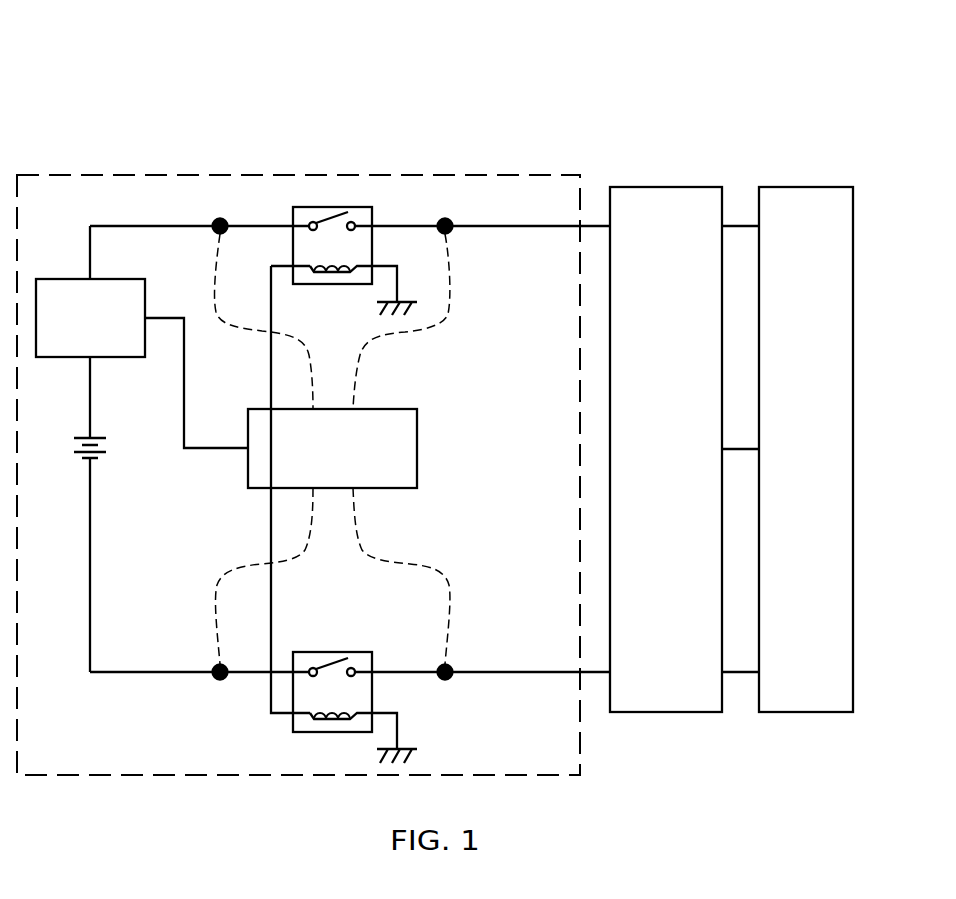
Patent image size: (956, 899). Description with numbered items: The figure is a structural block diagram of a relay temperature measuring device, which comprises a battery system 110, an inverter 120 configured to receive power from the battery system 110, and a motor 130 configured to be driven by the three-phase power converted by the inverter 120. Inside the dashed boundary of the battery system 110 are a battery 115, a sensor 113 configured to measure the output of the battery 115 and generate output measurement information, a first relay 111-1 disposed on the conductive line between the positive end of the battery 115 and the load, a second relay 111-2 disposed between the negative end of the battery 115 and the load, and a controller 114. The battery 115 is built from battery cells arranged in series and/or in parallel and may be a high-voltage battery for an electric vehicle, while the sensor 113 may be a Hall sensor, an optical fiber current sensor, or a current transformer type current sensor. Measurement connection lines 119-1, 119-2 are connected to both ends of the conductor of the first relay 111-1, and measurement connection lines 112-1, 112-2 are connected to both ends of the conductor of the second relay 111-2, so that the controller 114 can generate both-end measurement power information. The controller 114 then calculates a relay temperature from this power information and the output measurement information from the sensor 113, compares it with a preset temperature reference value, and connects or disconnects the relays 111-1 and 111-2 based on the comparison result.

The battery system 110 is at (122, 108).
The first relay 111-1 is at (333, 207).
The second relay 111-2 is at (333, 652).
The measurement connection line 119-1 is at (450, 290).
The measurement connection line 119-2 is at (214, 266).
The measurement connection line 112-1 is at (452, 605).
The measurement connection line 112-2 is at (214, 608).
The sensor 113 is at (118, 357).
The controller 114 is at (417, 448).
The battery 115 is at (106, 452).
The inverter 120 is at (668, 187).
The motor 130 is at (808, 187).